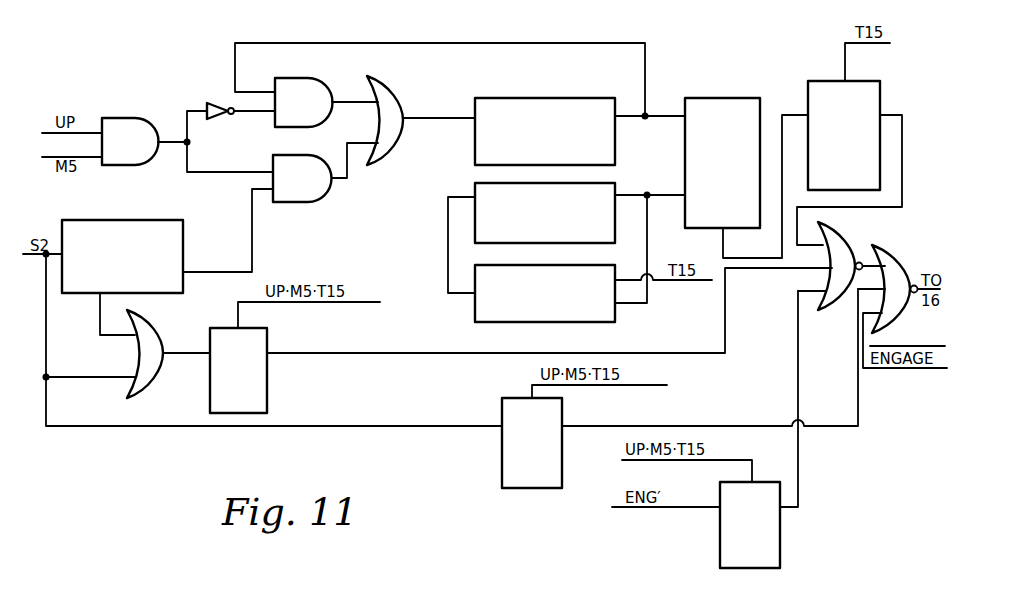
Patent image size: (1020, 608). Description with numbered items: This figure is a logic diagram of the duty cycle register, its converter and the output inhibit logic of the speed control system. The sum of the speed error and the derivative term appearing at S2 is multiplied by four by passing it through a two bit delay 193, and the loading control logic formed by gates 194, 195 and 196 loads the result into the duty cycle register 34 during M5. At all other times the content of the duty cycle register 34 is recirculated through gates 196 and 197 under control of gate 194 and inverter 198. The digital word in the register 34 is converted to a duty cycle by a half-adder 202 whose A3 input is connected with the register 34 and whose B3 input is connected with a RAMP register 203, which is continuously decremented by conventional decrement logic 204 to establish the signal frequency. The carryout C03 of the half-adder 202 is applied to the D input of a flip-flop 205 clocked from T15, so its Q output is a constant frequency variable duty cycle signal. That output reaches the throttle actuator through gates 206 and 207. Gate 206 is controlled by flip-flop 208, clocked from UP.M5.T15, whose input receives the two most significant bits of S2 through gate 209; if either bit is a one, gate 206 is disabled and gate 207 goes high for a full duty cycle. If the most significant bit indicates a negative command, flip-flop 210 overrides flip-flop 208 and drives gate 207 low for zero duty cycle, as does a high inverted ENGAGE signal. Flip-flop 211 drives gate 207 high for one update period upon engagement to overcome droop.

The gate 194 is at (128, 124).
The gate 197 is at (303, 92).
The inverter 198 is at (217, 117).
The gate 196 is at (393, 105).
The gate 195 is at (308, 190).
The two bit delay 193 is at (172, 238).
The gate 209 is at (150, 335).
The flip-flop 208 is at (250, 392).
The duty cycle register 34 is at (583, 108).
The RAMP register 203 is at (475, 187).
The decrement logic 204 is at (486, 305).
The half-adder 202 is at (737, 110).
The flip-flop 205 is at (822, 92).
The gate 206 is at (835, 277).
The gate 207 is at (892, 270).
The flip-flop 210 is at (518, 450).
The flip-flop 211 is at (770, 532).